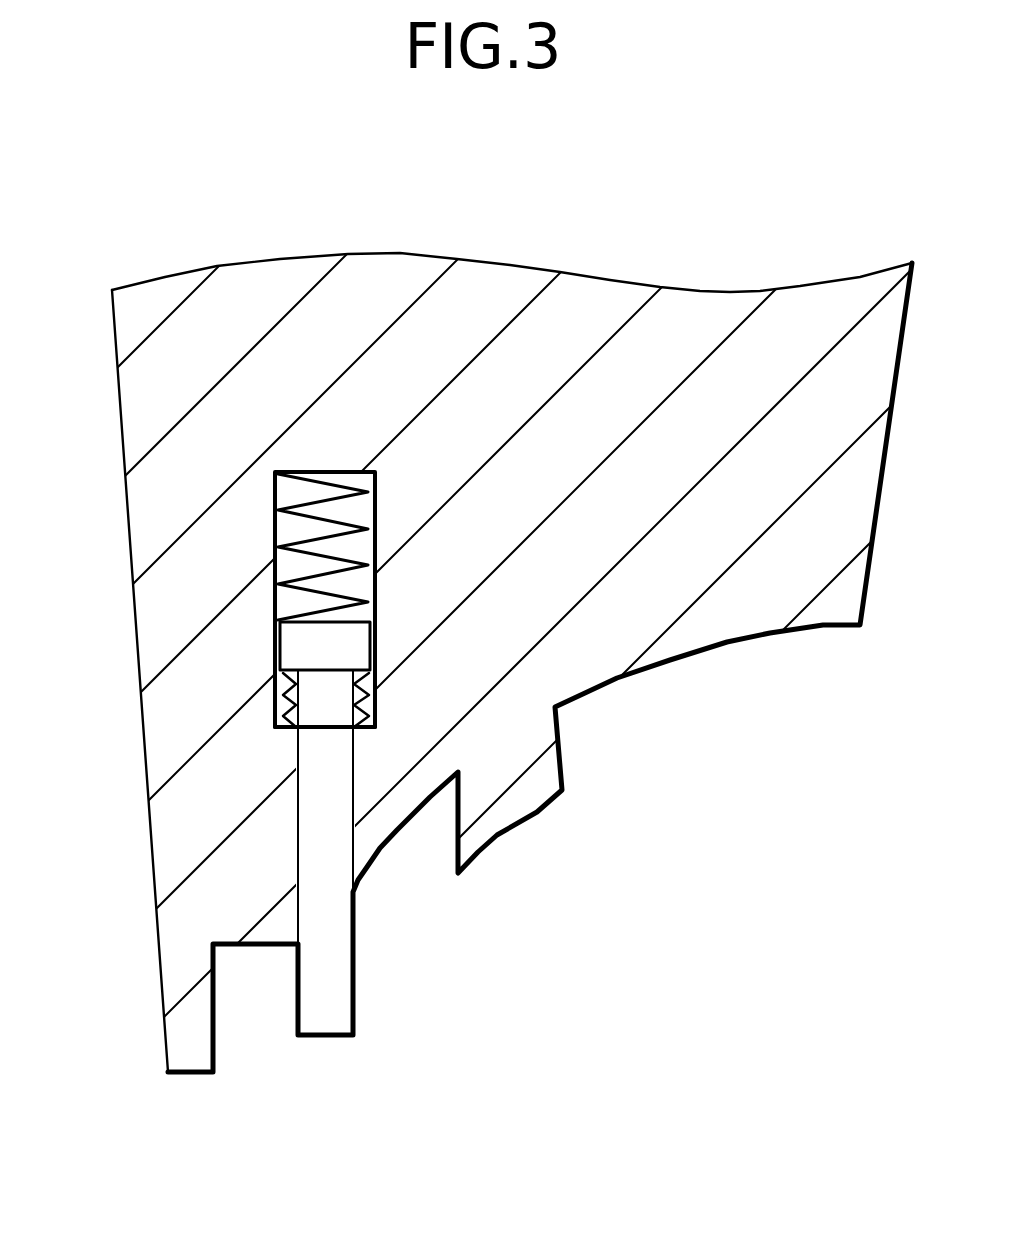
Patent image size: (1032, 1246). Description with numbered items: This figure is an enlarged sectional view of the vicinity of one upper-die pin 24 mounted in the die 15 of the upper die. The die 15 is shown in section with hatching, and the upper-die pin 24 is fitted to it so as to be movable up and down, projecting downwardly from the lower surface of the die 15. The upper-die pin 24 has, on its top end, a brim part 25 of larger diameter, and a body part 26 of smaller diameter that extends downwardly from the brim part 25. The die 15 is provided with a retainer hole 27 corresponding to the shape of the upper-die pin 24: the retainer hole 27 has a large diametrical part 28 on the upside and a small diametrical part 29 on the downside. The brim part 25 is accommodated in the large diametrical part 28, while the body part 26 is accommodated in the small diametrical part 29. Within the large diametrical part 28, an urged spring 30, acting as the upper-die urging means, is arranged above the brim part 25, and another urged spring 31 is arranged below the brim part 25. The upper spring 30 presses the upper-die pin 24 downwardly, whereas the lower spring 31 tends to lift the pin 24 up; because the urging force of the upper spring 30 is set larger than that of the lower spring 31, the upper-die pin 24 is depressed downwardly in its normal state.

The die 15 is at (737, 267).
The upper-die pin 24 is at (372, 1033).
The brim part 25 is at (287, 650).
The body part 26 is at (347, 971).
The retainer hole 27 is at (262, 689).
The large diametrical part 28 is at (277, 557).
The small diametrical part 29 is at (300, 846).
The urged spring 30 is at (277, 522).
The urged spring 31 is at (280, 720).